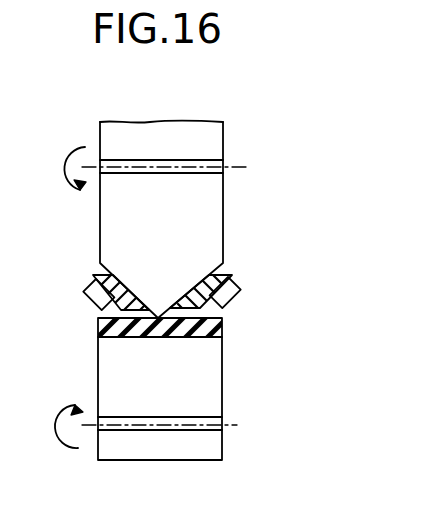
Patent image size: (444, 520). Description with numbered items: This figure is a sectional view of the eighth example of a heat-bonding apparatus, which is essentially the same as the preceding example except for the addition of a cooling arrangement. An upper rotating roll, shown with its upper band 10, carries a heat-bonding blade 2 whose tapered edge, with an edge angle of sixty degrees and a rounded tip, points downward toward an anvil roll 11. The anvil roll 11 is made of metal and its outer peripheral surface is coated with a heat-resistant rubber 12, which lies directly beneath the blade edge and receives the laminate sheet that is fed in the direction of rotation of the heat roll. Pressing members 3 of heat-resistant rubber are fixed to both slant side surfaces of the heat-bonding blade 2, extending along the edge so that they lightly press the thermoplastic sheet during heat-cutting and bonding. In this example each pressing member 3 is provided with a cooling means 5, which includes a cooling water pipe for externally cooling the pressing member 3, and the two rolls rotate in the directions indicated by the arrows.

The heat-bonding blade 2 is at (207, 217).
The pressing member 3 is at (100, 328).
The cooling means 5 is at (92, 292).
The upper shaft band 10 is at (208, 142).
The anvil roll 11 is at (203, 386).
The heat-resistant rubber 12 is at (220, 330).